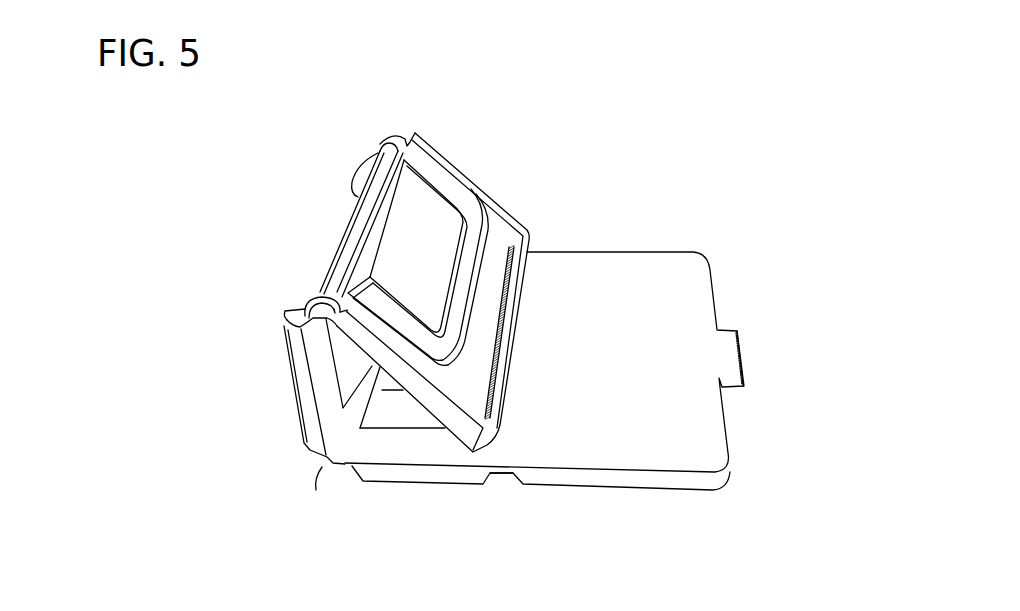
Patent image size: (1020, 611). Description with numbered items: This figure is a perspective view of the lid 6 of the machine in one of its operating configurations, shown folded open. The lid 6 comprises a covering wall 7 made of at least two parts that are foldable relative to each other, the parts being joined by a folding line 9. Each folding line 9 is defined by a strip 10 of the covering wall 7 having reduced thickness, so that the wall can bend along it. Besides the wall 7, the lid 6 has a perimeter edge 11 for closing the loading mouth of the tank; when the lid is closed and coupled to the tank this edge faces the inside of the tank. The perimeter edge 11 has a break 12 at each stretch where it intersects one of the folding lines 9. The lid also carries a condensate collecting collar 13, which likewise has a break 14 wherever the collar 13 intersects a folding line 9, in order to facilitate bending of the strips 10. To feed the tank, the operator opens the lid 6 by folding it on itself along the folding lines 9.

The lid 6 is at (557, 302).
The covering wall 7 is at (730, 235).
The folding line 9 is at (397, 137).
The strip 10 is at (352, 234).
The perimeter edge 11 is at (520, 283).
The break 12 is at (284, 322).
The condensate collecting collar 13 is at (472, 215).
The break 14 is at (293, 297).